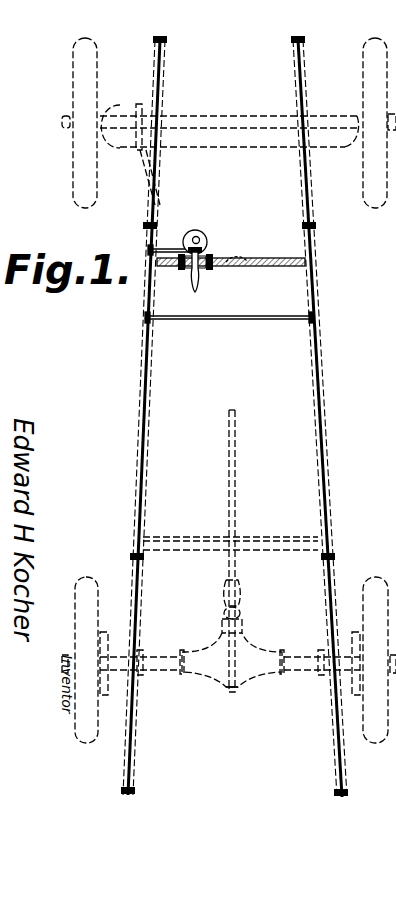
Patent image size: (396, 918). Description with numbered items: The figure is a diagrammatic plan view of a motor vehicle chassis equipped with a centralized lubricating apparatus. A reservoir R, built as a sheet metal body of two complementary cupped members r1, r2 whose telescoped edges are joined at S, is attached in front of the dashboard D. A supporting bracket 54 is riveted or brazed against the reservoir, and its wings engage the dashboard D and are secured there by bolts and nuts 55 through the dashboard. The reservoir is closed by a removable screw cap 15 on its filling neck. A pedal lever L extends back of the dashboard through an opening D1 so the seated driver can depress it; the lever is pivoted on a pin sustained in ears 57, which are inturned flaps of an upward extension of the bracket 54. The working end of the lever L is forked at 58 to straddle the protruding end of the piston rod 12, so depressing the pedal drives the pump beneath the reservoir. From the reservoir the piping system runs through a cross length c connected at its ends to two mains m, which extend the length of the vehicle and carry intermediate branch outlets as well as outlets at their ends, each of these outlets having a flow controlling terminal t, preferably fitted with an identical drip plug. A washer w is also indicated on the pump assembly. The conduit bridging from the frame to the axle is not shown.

The flow controlling terminals t is at (166, 40).
The mains m is at (143, 396).
The cross length c is at (245, 320).
The piston rod 12 is at (215, 253).
The dashboard D is at (278, 268).
The ears 57 is at (262, 261).
The washer w is at (245, 264).
The bolts and nuts 55 is at (176, 264).
The supporting bracket 54 is at (186, 271).
The opening D1 is at (206, 266).
The reservoir R is at (206, 242).
The screw cap 15 is at (200, 236).
The fork 58 is at (191, 248).
The pedal lever L is at (198, 286).
The soldered or brazed joint S is at (395, 404).
The cupped member r2 is at (395, 335).
The cupped member r1 is at (395, 494).